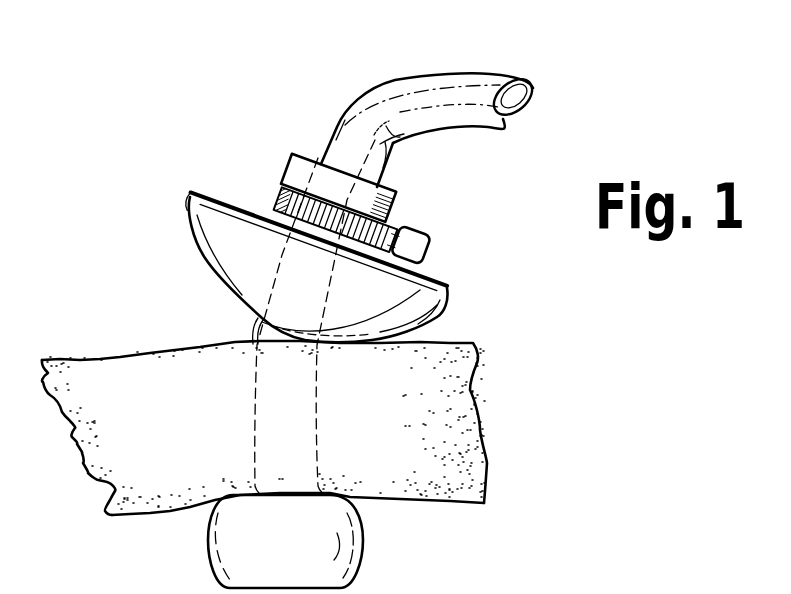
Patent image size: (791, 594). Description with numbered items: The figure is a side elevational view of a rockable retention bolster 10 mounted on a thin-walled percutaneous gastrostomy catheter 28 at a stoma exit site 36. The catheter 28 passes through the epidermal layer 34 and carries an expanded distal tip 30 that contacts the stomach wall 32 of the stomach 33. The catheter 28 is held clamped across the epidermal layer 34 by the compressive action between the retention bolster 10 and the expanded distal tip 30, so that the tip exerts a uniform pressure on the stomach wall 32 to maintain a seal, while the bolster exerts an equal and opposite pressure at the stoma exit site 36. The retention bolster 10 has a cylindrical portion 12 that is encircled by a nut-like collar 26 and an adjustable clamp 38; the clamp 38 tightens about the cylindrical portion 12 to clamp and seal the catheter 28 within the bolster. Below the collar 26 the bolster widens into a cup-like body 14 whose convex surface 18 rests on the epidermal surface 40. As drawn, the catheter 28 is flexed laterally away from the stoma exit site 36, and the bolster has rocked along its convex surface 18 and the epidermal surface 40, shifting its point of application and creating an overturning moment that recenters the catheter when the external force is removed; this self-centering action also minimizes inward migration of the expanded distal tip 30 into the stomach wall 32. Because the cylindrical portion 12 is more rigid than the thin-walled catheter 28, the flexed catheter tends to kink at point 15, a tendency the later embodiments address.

The retention bolster 10 is at (435, 282).
The cylindrical portion 12 is at (273, 210).
The cup-shaped shield 14 is at (193, 233).
The kink point 15 is at (395, 143).
The convex surface 18 is at (367, 343).
The nut 26 is at (290, 153).
The percutaneous gastrostomy catheter 28 is at (410, 76).
The expanded distal tip 30 is at (363, 565).
The stomach wall 32 is at (417, 503).
The stomach 33 is at (160, 567).
The epidermal layer 34 is at (184, 425).
The stoma exit site 36 is at (212, 319).
The adjustable clamp 38 is at (423, 240).
The epidermal surface 40 is at (412, 345).